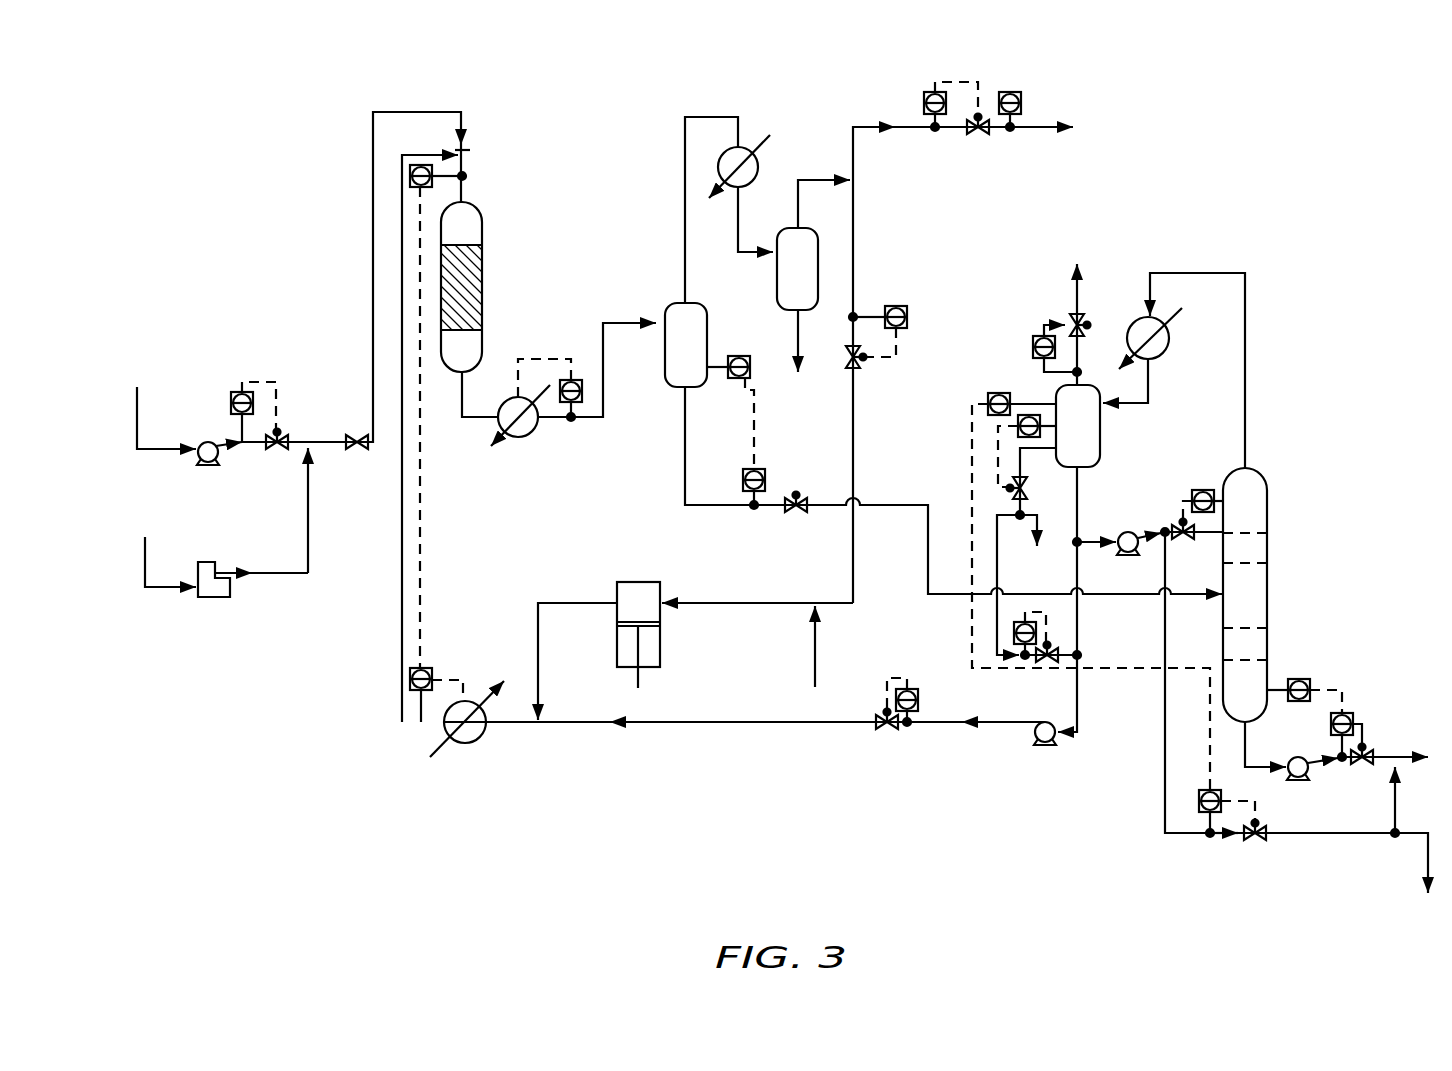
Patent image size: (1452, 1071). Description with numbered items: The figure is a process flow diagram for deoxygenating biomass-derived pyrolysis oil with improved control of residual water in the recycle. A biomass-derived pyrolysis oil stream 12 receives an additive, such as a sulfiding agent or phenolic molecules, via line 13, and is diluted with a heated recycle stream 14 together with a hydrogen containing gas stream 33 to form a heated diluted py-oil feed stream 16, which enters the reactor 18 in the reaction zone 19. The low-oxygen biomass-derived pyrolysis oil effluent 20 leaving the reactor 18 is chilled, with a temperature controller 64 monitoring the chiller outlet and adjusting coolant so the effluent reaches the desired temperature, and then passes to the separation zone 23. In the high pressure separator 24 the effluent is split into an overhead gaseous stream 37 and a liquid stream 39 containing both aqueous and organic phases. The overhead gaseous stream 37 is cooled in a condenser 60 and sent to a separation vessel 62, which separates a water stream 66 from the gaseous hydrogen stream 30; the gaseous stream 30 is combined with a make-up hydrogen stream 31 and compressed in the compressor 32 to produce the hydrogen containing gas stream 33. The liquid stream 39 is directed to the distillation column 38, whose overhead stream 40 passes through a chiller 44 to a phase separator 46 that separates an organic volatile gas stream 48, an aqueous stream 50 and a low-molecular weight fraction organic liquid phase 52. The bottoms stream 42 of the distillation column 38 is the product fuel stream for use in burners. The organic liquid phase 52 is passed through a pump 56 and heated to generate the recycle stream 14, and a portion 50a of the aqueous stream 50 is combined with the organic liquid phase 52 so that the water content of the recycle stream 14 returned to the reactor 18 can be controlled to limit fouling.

The biomass-derived pyrolysis oil stream 12 is at (139, 407).
The line 13 is at (307, 507).
The recycle stream 14 is at (402, 507).
The heated diluted py-oil feed stream 16 is at (464, 195).
The reactor 18 is at (484, 216).
The reaction zone 19 is at (532, 278).
The low-oxygen biomass-derived pyrolysis oil effluent 20 is at (460, 403).
The separation zone 23 is at (1120, 188).
The high pressure separator 24 is at (677, 302).
The gaseous hydrogen stream 30 is at (830, 177).
The make-up hydrogen stream 31 is at (816, 633).
The compressor 32 is at (661, 647).
The hydrogen containing gas stream 33 is at (537, 625).
The overhead gaseous stream 37 is at (686, 273).
The distillation column 38 is at (1252, 470).
The liquid stream 39 is at (684, 462).
The overhead stream 40 is at (1246, 383).
The bottoms stream 42 is at (1247, 745).
The chiller 44 is at (1172, 339).
The phase separator 46 is at (1102, 425).
The organic volatile gas stream 48 is at (1080, 295).
The aqueous stream 50 is at (1023, 455).
The portion of the aqueous stream 50a is at (998, 566).
The low-molecular weight fraction organic liquid phase 52 is at (1078, 503).
The pump 56 is at (1058, 740).
The condenser 60 is at (758, 172).
The separation vessel 62 is at (840, 223).
The temperature controller 64 is at (572, 379).
The water stream 66 is at (800, 336).